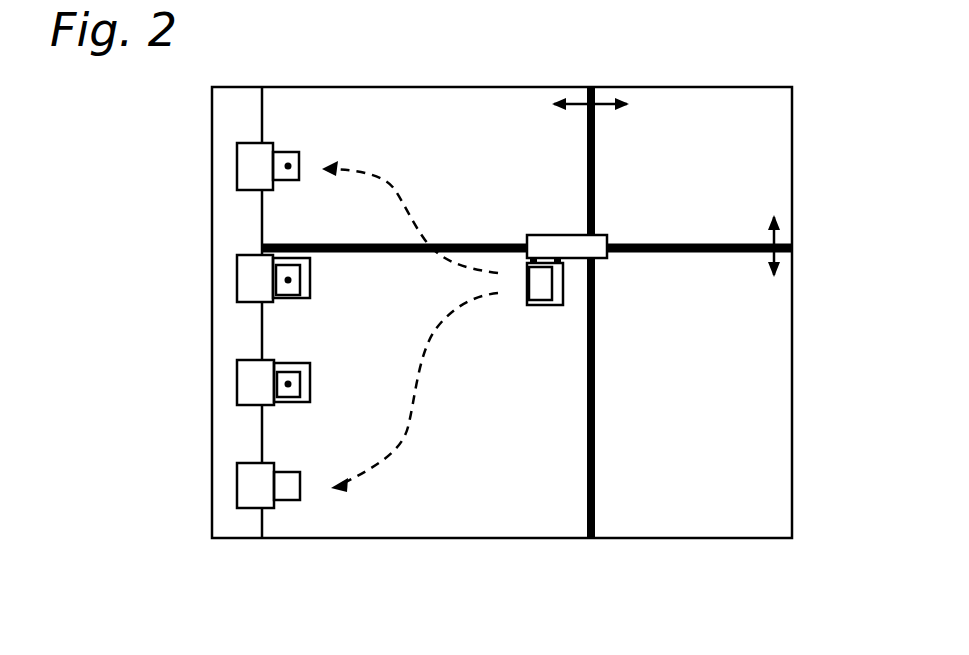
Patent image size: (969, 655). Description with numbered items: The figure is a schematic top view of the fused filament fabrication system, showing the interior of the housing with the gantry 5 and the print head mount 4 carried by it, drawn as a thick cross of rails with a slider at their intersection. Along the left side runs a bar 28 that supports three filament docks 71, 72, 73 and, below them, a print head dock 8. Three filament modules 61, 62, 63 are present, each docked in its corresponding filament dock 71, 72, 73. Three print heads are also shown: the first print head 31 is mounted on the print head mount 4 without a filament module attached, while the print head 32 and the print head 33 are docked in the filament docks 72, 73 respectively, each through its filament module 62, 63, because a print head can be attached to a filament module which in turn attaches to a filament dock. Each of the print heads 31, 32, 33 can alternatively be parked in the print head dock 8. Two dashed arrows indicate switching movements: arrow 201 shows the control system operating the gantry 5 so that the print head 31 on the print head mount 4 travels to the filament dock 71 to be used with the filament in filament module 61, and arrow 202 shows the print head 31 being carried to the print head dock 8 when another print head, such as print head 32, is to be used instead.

The print head mount 4 is at (553, 234).
The gantry 5 is at (678, 243).
The print head dock 8 is at (247, 485).
The bar 28 is at (237, 530).
The first print head 31 is at (541, 306).
The print head 32 is at (326, 305).
The print head 33 is at (325, 400).
The filament module 61 is at (299, 165).
The filament module 62 is at (310, 280).
The filament module 63 is at (310, 384).
The filament dock 71 is at (243, 165).
The filament dock 72 is at (243, 278).
The filament dock 73 is at (244, 383).
The arrow 201 is at (410, 222).
The arrow 202 is at (410, 428).